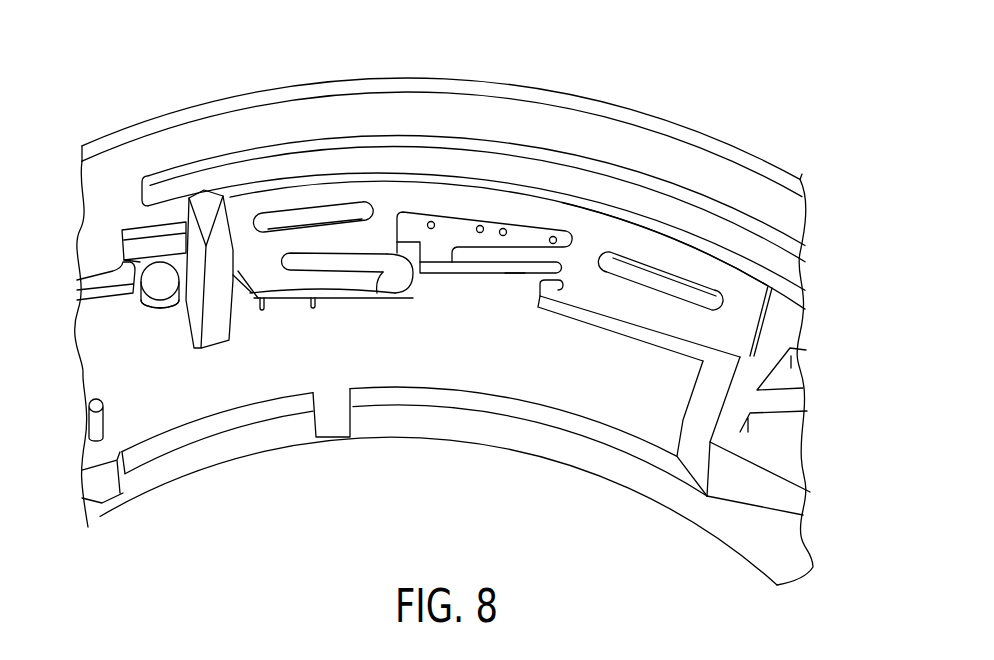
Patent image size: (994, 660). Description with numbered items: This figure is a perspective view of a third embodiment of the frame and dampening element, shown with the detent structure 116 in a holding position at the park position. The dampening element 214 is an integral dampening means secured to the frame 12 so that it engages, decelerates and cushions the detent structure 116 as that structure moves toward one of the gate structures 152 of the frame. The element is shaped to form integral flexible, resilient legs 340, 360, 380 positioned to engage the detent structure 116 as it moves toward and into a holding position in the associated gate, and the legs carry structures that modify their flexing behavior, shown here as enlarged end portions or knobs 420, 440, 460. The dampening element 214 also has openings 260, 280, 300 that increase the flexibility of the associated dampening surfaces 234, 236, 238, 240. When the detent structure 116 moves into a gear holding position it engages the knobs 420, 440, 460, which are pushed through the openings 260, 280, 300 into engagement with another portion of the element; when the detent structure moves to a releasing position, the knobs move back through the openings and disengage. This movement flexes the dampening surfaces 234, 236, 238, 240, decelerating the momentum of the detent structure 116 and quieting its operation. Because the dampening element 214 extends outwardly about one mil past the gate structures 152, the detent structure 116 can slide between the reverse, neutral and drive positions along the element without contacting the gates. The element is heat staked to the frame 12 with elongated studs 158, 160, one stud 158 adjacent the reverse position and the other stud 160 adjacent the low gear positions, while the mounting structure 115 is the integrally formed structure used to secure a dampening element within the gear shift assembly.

The frame 12 is at (589, 97).
The mounting structure 115 is at (262, 310).
The detent structure 116 is at (206, 200).
The gate structures 152 is at (463, 352).
The elongated stud 158 is at (290, 222).
The elongated stud 160 is at (662, 272).
The dampening element 214 is at (725, 270).
The dampening surface 234 is at (165, 308).
The dampening surface 236 is at (313, 306).
The dampening surface 238 is at (514, 272).
The dampening surface 240 is at (645, 330).
The opening 260 is at (164, 262).
The opening 280 is at (347, 262).
The opening 300 is at (493, 239).
The flexible resilient leg 340 is at (150, 304).
The flexible resilient leg 360 is at (396, 294).
The flexible resilient leg 380 is at (490, 262).
The enlarged end portion 420 is at (158, 252).
The enlarged end portion 440 is at (392, 255).
The enlarged end portion 460 is at (439, 241).